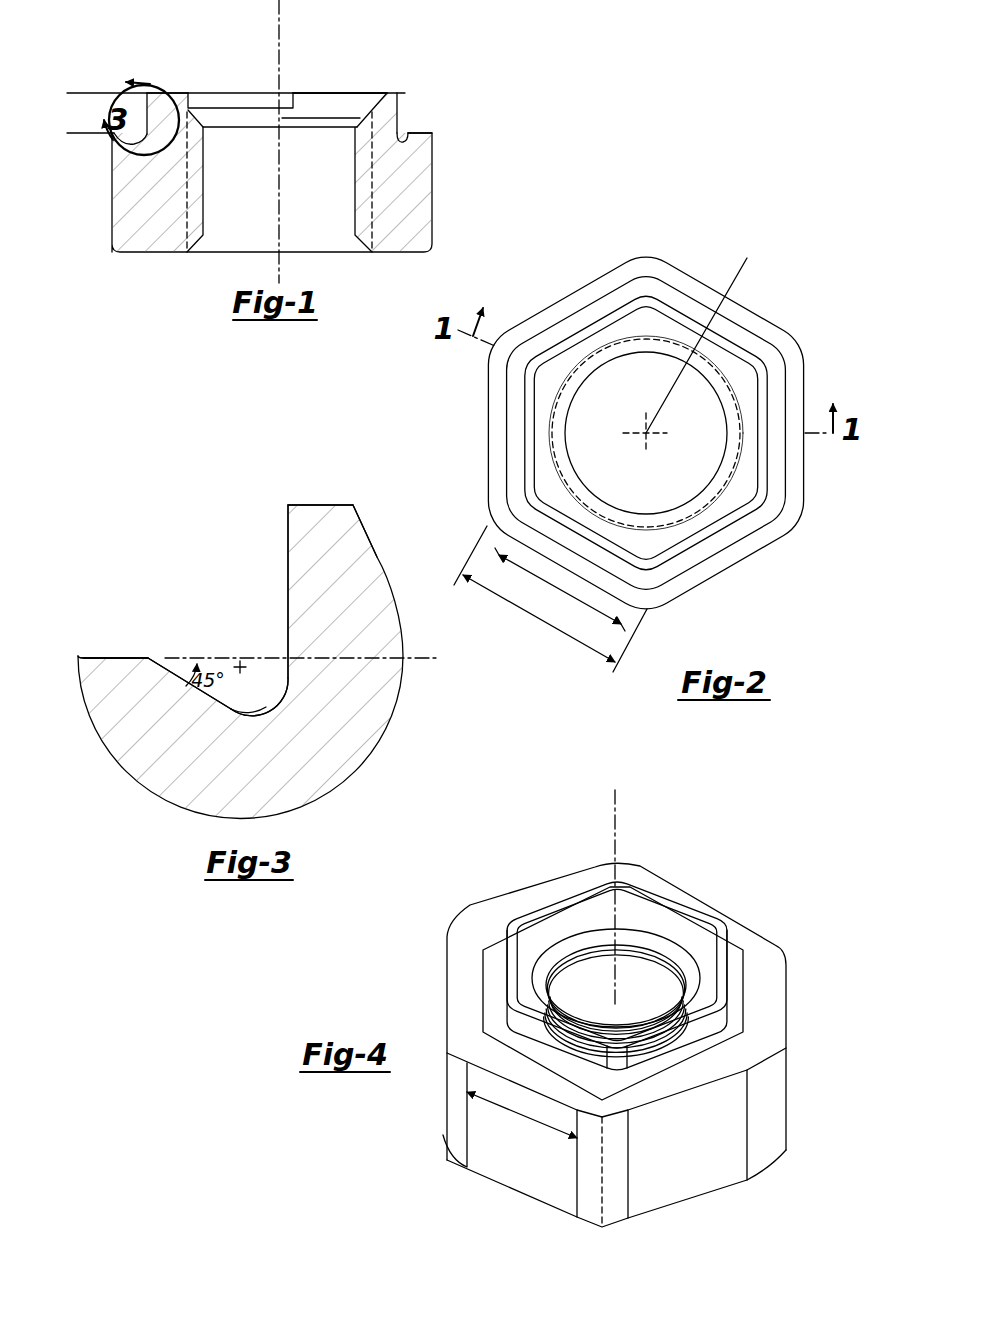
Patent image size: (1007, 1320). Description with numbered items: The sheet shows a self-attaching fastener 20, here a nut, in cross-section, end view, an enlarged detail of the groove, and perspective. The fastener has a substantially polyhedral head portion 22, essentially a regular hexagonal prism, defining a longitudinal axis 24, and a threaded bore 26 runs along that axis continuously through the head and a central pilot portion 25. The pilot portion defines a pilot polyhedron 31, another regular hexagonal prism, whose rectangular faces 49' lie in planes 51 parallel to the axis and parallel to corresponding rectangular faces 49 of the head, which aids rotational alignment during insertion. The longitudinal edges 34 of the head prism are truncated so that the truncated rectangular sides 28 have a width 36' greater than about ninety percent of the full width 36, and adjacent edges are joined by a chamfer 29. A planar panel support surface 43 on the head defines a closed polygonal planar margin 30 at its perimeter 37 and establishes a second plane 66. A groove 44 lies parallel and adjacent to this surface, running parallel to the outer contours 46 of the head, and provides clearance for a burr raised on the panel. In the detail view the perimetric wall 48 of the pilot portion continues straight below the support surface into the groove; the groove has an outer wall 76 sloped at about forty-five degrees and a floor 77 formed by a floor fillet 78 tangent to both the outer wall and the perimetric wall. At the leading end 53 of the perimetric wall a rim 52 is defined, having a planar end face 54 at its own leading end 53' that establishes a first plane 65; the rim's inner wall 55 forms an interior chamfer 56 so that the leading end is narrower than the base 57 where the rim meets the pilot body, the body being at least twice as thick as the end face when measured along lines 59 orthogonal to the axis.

In FIG. 1, the self-attaching fastener 20 is at (130, 268).
In FIG. 2, the self-attaching fastener 20 is at (768, 254).
In FIG. 4, the self-attaching fastener 20 is at (757, 897).
In FIG. 1, the head portion 22 is at (432, 210).
In FIG. 3, the head portion 22 is at (167, 789).
In FIG. 2, the head portion 22 is at (485, 401).
In FIG. 4, the head portion 22 is at (793, 1028).
In FIG. 1, the longitudinal axis 24 is at (282, 15).
In FIG. 2, the longitudinal axis 24 is at (650, 432).
In FIG. 4, the longitudinal axis 24 is at (617, 810).
In FIG. 1, the central pilot portion 25 is at (403, 100).
In FIG. 3, the central pilot portion 25 is at (353, 580).
In FIG. 2, the central pilot portion 25 is at (742, 346).
In FIG. 4, the central pilot portion 25 is at (740, 953).
In FIG. 1, the threaded bore 26 is at (357, 207).
In FIG. 2, the threaded bore 26 is at (572, 439).
In FIG. 4, the threaded bore 26 is at (616, 993).
In FIG. 4, the truncated rectangular sides 28 is at (517, 1165).
In FIG. 2, the chamfer 29 is at (491, 510).
In FIG. 4, the chamfer 29 is at (465, 1030).
In FIG. 2, the closed substantially polygonal planar margin 30 is at (763, 543).
In FIG. 4, the closed substantially polygonal planar margin 30 is at (760, 1040).
In FIG. 2, the pilot polyhedron 31 is at (777, 397).
In FIG. 4, the pilot polyhedron 31 is at (663, 898).
In FIG. 4, the longitudinal edges 34 is at (590, 1195).
In FIG. 2, the width 36 is at (550, 599).
In FIG. 2, the width of the truncated rectangular sides 36' is at (560, 589).
In FIG. 4, the width of the truncated rectangular sides 36' is at (522, 1119).
In FIG. 2, the perimeter 37 is at (795, 522).
In FIG. 4, the perimeter 37 is at (450, 975).
In FIG. 1, the planar panel support surface 43 is at (423, 132).
In FIG. 3, the planar panel support surface 43 is at (122, 653).
In FIG. 2, the planar panel support surface 43 is at (797, 494).
In FIG. 4, the planar panel support surface 43 is at (775, 980).
In FIG. 1, the groove 44 is at (405, 122).
In FIG. 3, the groove 44 is at (273, 700).
In FIG. 2, the groove 44 is at (712, 549).
In FIG. 4, the groove 44 is at (760, 955).
In FIG. 2, the outer contours 46 is at (485, 433).
In FIG. 1, the perimetric wall 48 is at (400, 107).
In FIG. 3, the perimetric wall 48 is at (287, 553).
In FIG. 2, the perimetric wall 48 is at (582, 328).
In FIG. 4, the perimetric wall 48 is at (507, 933).
In FIG. 4, the rectangular face 49 is at (705, 1211).
In FIG. 4, the rectangular face 49' is at (593, 1076).
In FIG. 4, the planes 51 is at (565, 1048).
In FIG. 1, the rim 52 is at (393, 92).
In FIG. 3, the rim 52 is at (320, 502).
In FIG. 4, the rim 52 is at (643, 880).
In FIG. 1, the leading end 53 is at (340, 67).
In FIG. 4, the leading end 53 is at (555, 870).
In FIG. 1, the leading end of the rim 53' is at (157, 63).
In FIG. 3, the leading end of the rim 53' is at (340, 478).
In FIG. 1, the planar end face 54 is at (147, 84).
In FIG. 3, the planar end face 54 is at (333, 502).
In FIG. 1, the inner wall 55 is at (178, 100).
In FIG. 1, the interior chamfer 56 is at (172, 90).
In FIG. 3, the interior chamfer 56 is at (363, 522).
In FIG. 1, the base of the rim 57 is at (158, 110).
In FIG. 1, the lines 59 is at (325, 90).
In FIG. 2, the lines 59 is at (732, 269).
In FIG. 1, the first plane 65 is at (95, 92).
In FIG. 1, the second plane 66 is at (90, 128).
In FIG. 3, the outer wall 76 is at (175, 678).
In FIG. 3, the floor 77 is at (237, 707).
In FIG. 3, the floor fillet 78 is at (277, 678).